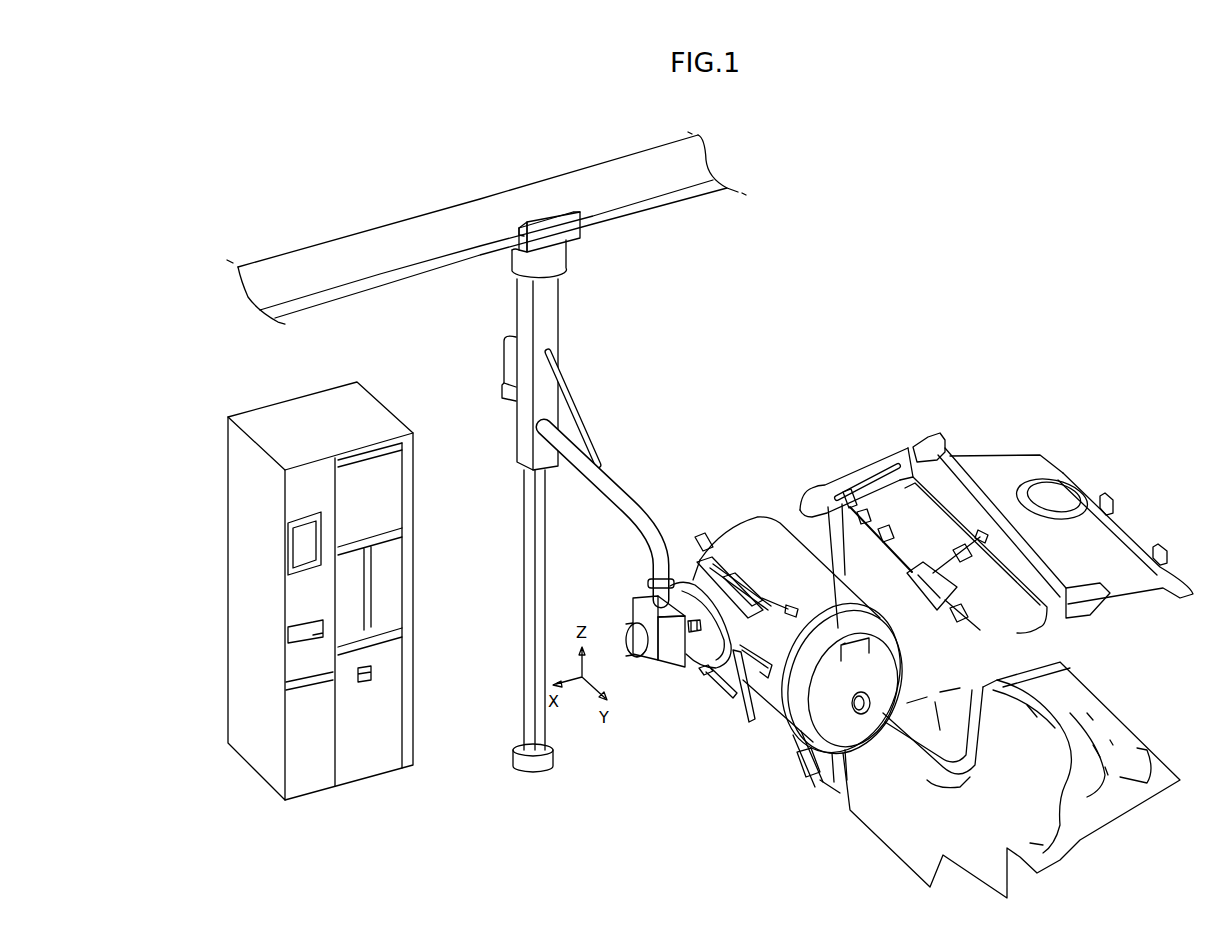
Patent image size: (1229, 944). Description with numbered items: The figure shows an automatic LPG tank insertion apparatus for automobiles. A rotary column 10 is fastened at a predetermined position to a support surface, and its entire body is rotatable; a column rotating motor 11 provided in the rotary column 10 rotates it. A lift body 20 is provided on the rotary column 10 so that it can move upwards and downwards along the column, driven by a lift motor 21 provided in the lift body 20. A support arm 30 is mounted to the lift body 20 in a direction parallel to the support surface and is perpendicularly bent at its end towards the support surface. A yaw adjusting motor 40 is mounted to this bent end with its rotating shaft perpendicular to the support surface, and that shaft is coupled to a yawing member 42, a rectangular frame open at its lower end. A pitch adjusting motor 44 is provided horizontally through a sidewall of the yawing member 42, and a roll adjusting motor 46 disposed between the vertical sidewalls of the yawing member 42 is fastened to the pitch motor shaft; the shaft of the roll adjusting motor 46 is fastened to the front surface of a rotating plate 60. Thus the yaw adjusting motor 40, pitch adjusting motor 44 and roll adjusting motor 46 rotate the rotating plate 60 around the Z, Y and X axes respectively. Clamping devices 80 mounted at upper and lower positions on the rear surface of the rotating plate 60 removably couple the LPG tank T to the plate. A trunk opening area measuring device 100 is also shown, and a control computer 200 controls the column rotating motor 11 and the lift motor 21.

The rotary column 10 is at (530, 597).
The column rotating motor 11 is at (512, 262).
The lift body 20 is at (553, 313).
The lift motor 21 is at (510, 360).
The support arm 30 is at (625, 493).
The yaw adjusting motor 40 is at (628, 659).
The yawing member 42 is at (668, 658).
The pitch adjusting motor 44 is at (627, 613).
The roll adjusting motor 46 is at (638, 660).
The rotating plate 60 is at (700, 680).
The clamping devices 80 is at (740, 560).
The trunk opening area measuring device 100 is at (927, 570).
The control computer 200 is at (358, 767).
The LPG tank T is at (782, 540).